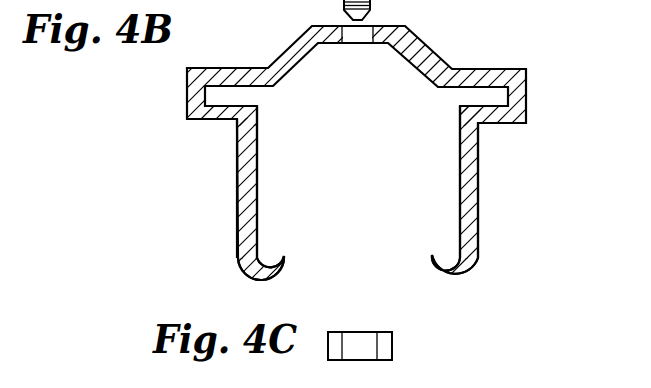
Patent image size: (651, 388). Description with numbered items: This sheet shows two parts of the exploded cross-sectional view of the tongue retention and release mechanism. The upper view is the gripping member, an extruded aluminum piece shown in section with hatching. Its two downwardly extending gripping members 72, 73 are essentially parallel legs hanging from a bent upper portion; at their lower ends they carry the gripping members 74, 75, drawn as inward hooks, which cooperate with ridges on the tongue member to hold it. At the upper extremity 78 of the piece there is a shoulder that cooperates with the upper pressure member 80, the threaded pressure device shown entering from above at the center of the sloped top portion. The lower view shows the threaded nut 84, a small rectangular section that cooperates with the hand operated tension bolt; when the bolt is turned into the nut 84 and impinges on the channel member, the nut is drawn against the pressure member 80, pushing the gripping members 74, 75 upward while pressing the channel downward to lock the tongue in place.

In FIG. 4B, the downwardly extending gripping member 72 is at (480, 186).
In FIG. 4B, the downwardly extending gripping member 73 is at (237, 176).
In FIG. 4B, the lower gripping portion 74 is at (438, 278).
In FIG. 4B, the gripping member 75 is at (266, 276).
In FIG. 4B, the upper extremity 78 is at (452, 68).
In FIG. 4B, the upper pressure member 80 is at (405, 27).
In FIG. 4C, the threaded nut 84 is at (393, 351).